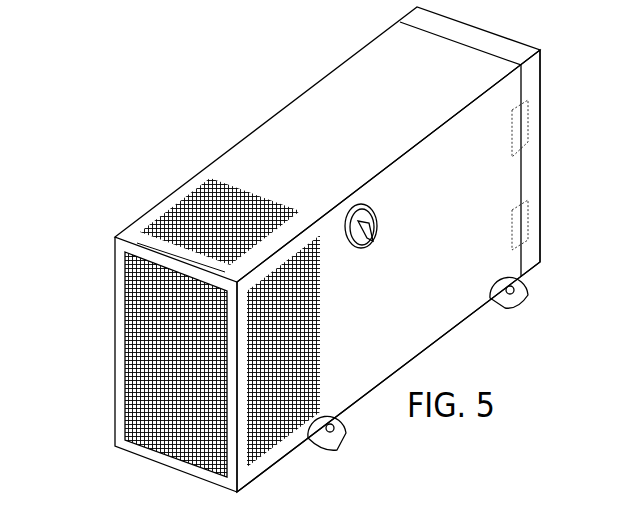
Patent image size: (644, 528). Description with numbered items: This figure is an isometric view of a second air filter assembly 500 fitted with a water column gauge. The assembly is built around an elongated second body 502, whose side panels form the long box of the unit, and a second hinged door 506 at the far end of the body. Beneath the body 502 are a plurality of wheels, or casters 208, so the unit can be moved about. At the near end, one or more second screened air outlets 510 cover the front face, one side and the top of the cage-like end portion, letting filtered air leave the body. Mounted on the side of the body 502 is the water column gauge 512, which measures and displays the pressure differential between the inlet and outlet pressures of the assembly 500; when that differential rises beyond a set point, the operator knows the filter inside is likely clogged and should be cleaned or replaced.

The second air filter assembly 500 is at (275, 90).
The second body 502 is at (372, 138).
The second hinged door 506 is at (496, 149).
The second screened air outlets 510 is at (256, 383).
The water column gauge 512 is at (373, 227).
The wheels (casters) 208 is at (337, 437).